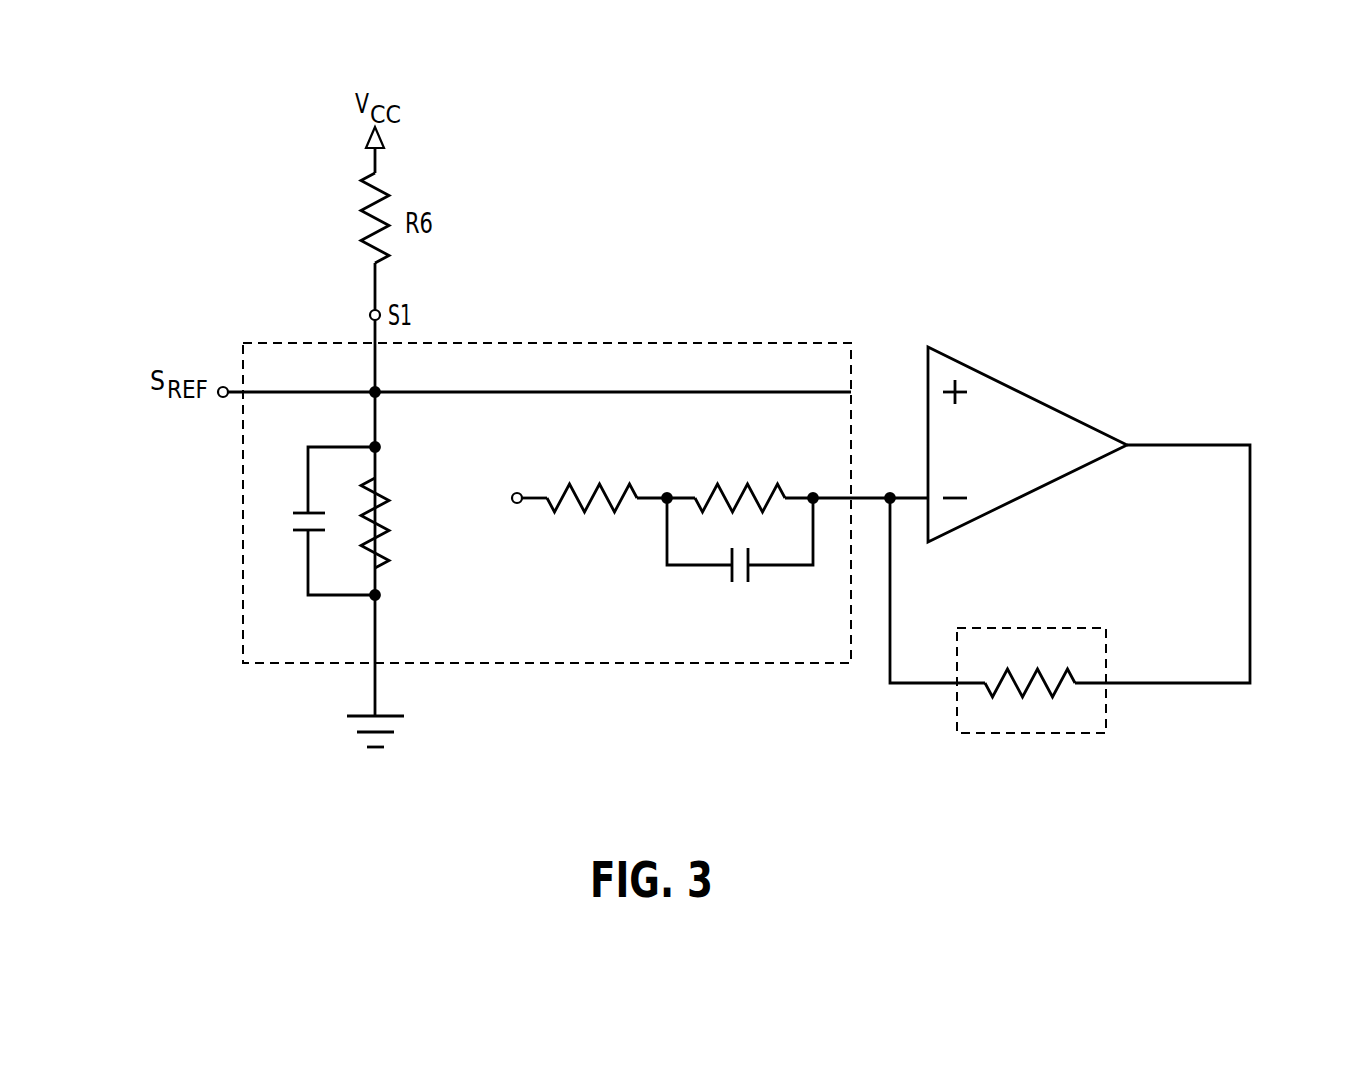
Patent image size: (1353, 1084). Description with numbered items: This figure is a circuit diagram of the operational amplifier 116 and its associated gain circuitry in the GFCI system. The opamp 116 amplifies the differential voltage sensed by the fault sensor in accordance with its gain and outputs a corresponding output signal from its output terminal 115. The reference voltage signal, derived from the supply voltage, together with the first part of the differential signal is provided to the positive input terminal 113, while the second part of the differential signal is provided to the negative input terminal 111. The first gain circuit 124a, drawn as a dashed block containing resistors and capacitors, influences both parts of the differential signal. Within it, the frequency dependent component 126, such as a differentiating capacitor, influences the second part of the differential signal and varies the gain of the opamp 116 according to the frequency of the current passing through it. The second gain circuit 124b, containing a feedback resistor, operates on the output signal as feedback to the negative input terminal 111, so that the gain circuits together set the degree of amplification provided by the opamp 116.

The first gain circuit 124a is at (585, 523).
The second gain circuit 124b is at (988, 735).
The frequency dependent component 126 is at (700, 589).
The operational amplifier 116 is at (1058, 407).
The positive input terminal 113 is at (968, 374).
The negative input terminal 111 is at (968, 514).
The output terminal 115 is at (1130, 449).